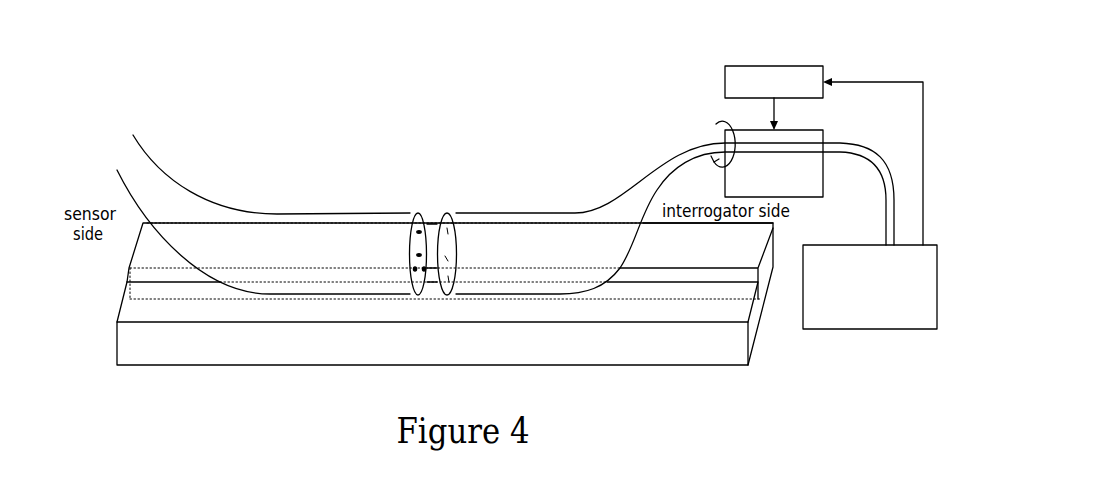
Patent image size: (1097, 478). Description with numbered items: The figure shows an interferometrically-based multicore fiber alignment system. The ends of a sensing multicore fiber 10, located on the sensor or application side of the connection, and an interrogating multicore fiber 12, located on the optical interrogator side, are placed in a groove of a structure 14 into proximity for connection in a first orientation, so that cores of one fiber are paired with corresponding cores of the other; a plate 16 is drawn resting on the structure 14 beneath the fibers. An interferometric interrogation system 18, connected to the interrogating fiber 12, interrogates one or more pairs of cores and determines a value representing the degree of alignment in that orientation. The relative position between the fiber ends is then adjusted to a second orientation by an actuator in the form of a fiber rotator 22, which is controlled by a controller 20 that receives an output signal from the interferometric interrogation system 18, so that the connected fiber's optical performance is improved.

The sensing multicore fiber 10 is at (343, 213).
The interrogating multicore fiber 12 is at (515, 213).
The structure 14 is at (687, 350).
The plate 16 is at (140, 275).
The interferometric interrogation system 18 is at (820, 329).
The controller 20 is at (808, 99).
The fiber rotator 22 is at (823, 172).